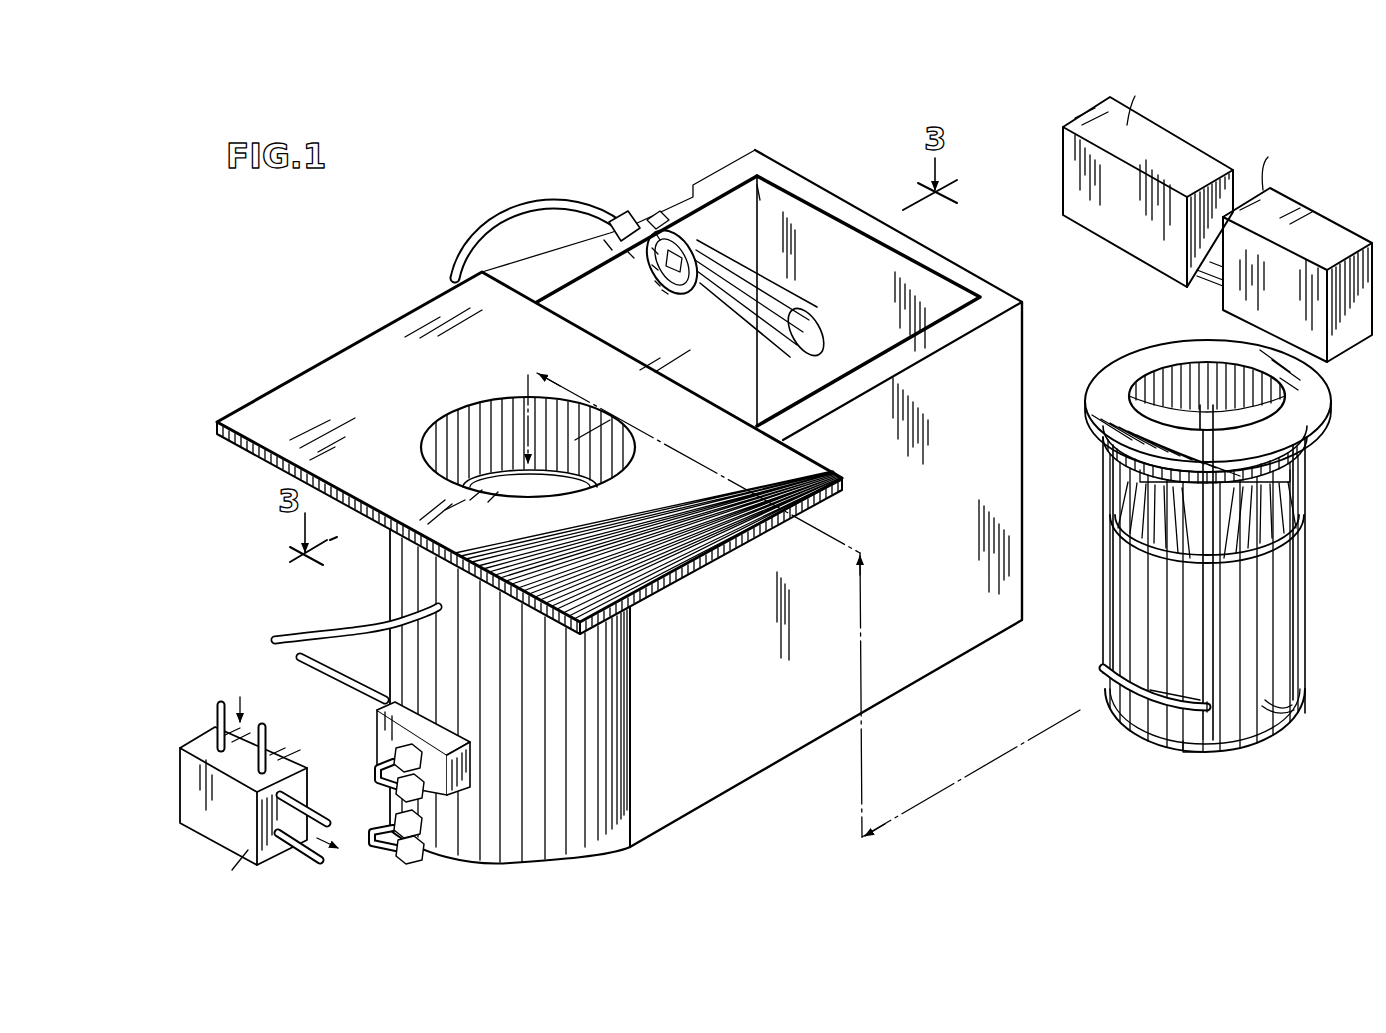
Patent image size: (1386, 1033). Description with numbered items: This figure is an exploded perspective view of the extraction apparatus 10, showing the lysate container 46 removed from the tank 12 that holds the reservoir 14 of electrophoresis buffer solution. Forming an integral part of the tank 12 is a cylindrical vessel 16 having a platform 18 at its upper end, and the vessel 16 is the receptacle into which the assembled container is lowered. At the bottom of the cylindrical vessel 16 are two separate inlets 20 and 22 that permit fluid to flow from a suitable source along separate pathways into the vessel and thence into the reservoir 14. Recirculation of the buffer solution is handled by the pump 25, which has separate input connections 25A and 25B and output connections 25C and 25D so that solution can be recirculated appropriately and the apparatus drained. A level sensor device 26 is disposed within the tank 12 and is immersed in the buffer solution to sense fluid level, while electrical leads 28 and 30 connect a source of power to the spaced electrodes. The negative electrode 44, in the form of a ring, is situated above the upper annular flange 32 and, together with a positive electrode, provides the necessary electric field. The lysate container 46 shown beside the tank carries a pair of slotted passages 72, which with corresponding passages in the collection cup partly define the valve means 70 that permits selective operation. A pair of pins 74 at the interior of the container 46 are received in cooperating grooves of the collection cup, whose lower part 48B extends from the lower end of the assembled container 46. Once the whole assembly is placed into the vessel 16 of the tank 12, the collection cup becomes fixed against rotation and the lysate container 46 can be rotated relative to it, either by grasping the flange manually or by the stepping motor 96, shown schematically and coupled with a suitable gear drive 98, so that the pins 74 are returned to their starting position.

The extraction apparatus 10 is at (373, 334).
The tank 12 is at (1003, 247).
The reservoir 14 is at (785, 205).
The cylindrical vessel 16 is at (455, 405).
The platform 18 is at (803, 465).
The inlet 20 is at (372, 772).
The inlet 22 is at (374, 817).
The pump 25 is at (277, 748).
The input connection 25A is at (220, 703).
The input connection 25B is at (264, 733).
The output connection 25C is at (315, 858).
The output connection 25D is at (312, 808).
The level sensor device 26 is at (730, 258).
The electrical lead 28 is at (276, 636).
The electrical lead 30 is at (322, 677).
The upper annular flange 32 is at (488, 493).
The negative electrode 44 is at (547, 468).
The lysate container 46 is at (1133, 348).
The lower part of collection cup 48B is at (1215, 753).
The valve means 70 is at (1107, 697).
The slotted passages 72 is at (1158, 695).
The pins 74 is at (1267, 702).
The stepping motor 96 is at (1332, 217).
The gear drive 98 is at (1215, 148).